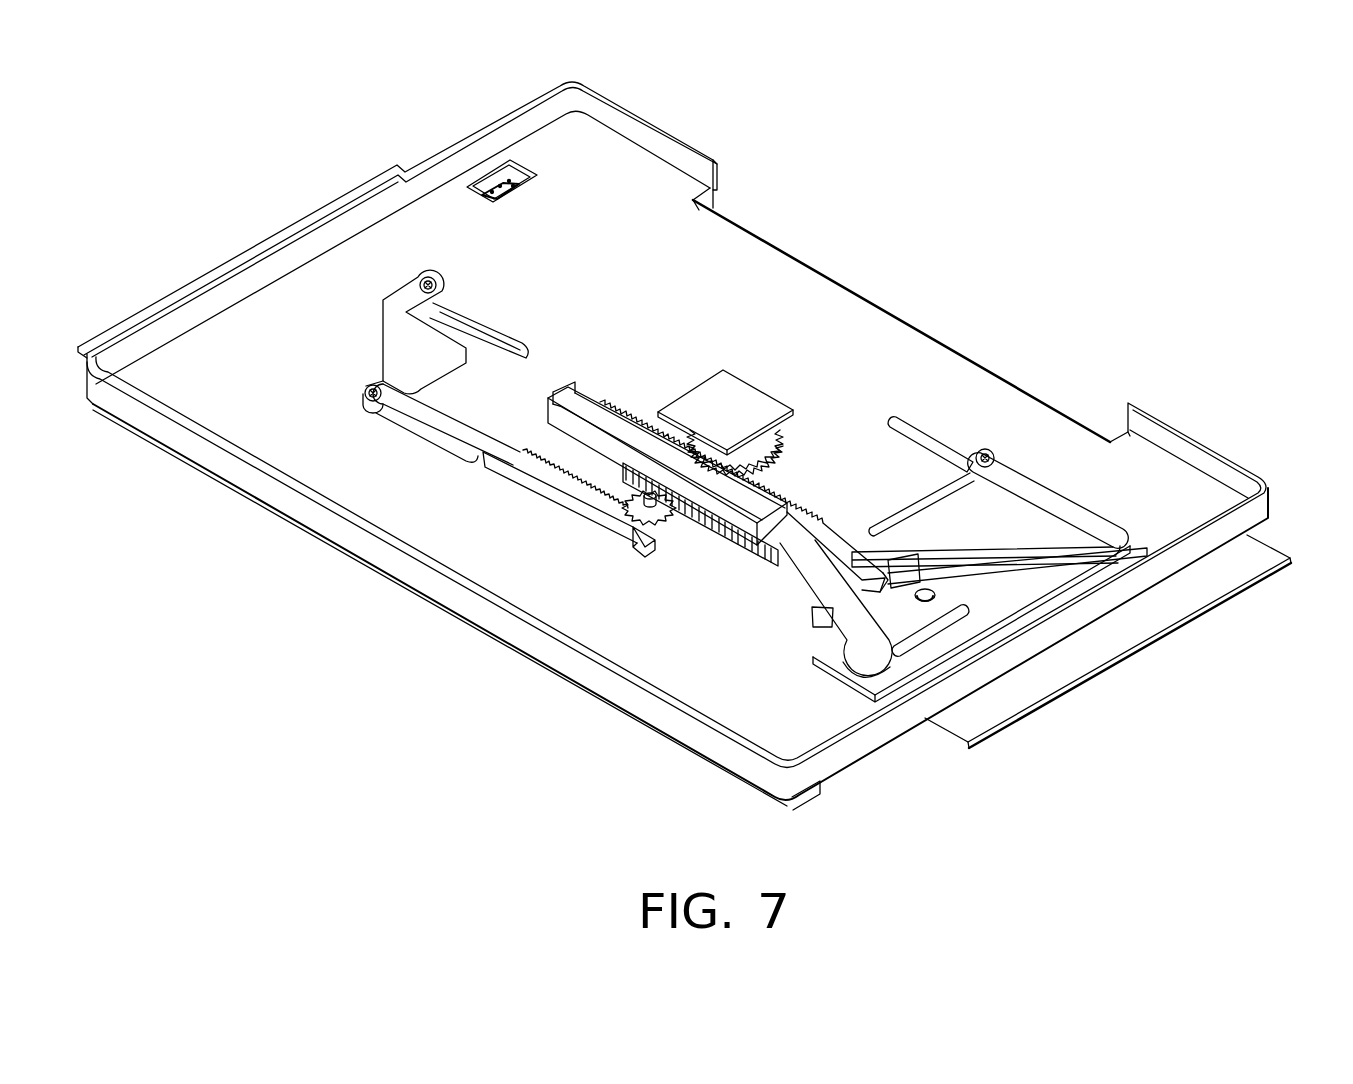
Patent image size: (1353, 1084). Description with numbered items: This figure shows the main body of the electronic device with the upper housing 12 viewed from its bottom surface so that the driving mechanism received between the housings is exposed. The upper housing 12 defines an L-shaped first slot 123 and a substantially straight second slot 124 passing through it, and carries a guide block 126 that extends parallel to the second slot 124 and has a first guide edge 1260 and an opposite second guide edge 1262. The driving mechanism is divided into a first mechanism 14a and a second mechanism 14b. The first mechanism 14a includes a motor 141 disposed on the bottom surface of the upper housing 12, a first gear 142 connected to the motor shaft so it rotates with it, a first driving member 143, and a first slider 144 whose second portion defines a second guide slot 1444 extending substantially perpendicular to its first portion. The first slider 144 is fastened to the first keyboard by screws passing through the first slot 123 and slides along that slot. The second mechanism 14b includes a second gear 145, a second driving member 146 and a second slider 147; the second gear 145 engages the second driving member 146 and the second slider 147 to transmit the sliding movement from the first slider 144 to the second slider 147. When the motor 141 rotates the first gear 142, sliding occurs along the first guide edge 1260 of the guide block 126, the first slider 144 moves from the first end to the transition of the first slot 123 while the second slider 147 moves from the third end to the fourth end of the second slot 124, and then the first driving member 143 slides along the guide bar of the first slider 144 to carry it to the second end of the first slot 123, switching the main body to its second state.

The upper housing 12 is at (203, 303).
The first slot 123 is at (947, 497).
The second slot 124 is at (463, 325).
The guide block 126 is at (465, 46).
The first guide edge 1260 is at (577, 390).
The second guide edge 1262 is at (545, 408).
The first mechanism 14a is at (833, 131).
The motor 141 is at (734, 407).
The first gear 142 is at (785, 440).
The first driving member 143 is at (627, 397).
The first slider 144 is at (963, 527).
The second guide slot 1444 is at (930, 633).
The second mechanism 14b is at (385, 712).
The second gear 145 is at (640, 507).
The second driving member 146 is at (630, 482).
The second slider 147 is at (447, 416).